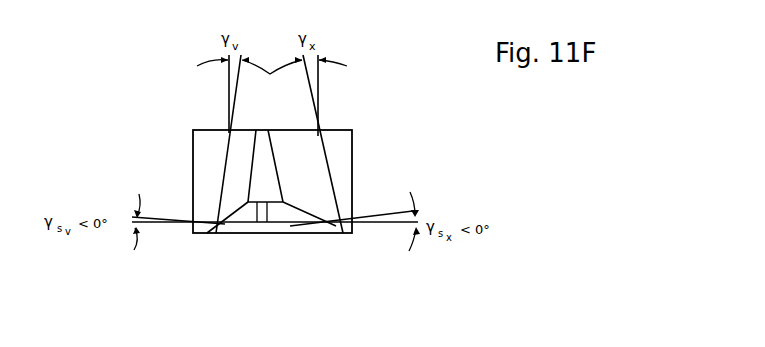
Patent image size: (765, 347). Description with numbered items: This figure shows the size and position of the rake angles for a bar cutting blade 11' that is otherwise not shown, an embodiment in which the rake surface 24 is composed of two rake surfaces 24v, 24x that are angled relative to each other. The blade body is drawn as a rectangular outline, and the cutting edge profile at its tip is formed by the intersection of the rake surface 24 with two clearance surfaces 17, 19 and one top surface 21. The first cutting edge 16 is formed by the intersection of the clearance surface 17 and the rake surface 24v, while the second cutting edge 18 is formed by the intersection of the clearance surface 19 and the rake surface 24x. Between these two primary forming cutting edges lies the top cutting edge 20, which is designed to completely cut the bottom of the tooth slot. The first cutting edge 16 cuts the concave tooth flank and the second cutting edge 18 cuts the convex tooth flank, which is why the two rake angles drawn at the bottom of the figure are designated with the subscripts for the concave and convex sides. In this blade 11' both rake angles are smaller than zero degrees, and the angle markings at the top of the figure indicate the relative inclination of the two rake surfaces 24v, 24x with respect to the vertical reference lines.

The bar cutting blade 11' is at (304, 173).
The top surface 21 is at (268, 173).
The clearance surface 17 is at (242, 147).
The clearance surface 19 is at (295, 147).
The first cutting edge 16 is at (227, 216).
The second cutting edge 18 is at (313, 214).
The top cutting edge 20 is at (263, 216).
The rake surface 24 is at (283, 210).
The rake surface 24v is at (245, 215).
The rake surface 24x is at (291, 213).